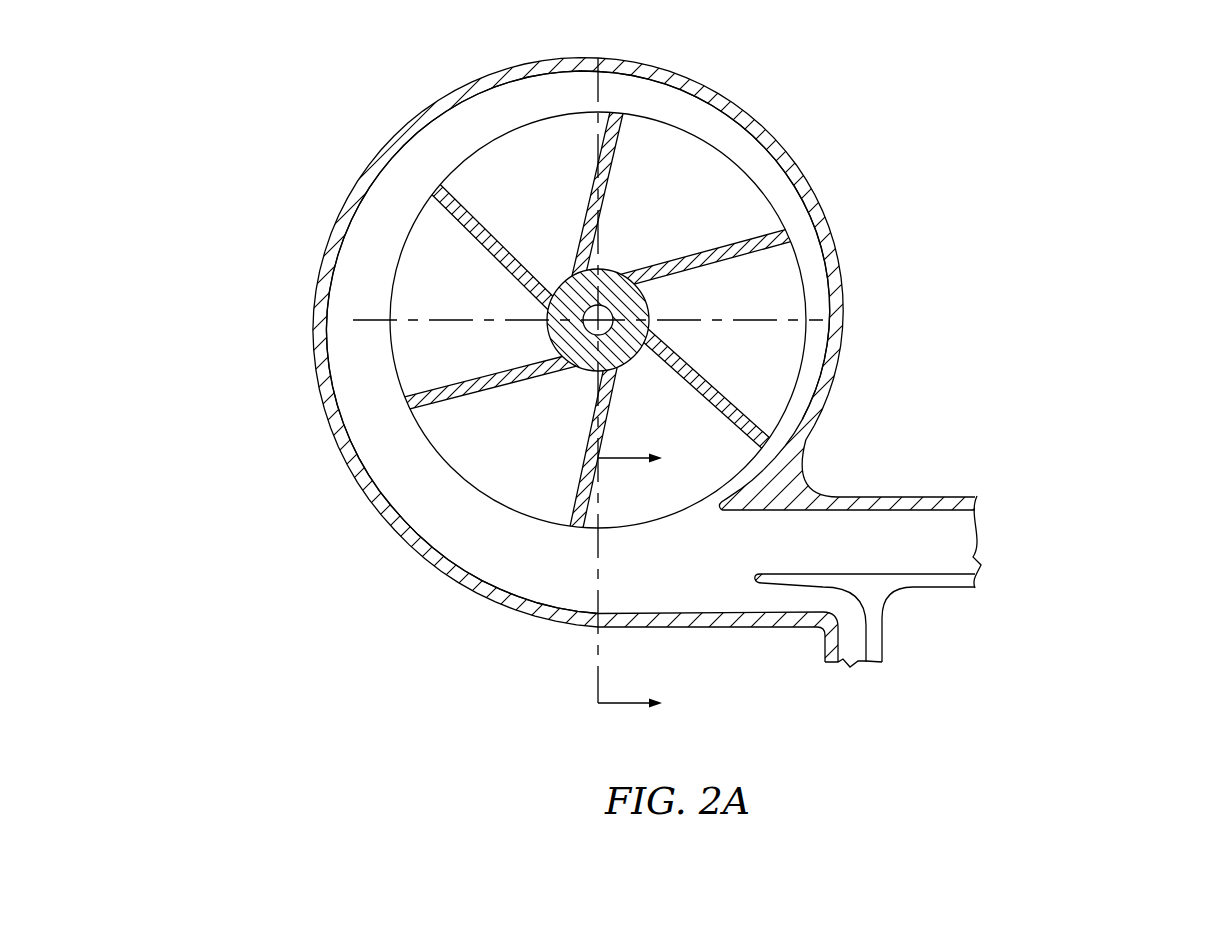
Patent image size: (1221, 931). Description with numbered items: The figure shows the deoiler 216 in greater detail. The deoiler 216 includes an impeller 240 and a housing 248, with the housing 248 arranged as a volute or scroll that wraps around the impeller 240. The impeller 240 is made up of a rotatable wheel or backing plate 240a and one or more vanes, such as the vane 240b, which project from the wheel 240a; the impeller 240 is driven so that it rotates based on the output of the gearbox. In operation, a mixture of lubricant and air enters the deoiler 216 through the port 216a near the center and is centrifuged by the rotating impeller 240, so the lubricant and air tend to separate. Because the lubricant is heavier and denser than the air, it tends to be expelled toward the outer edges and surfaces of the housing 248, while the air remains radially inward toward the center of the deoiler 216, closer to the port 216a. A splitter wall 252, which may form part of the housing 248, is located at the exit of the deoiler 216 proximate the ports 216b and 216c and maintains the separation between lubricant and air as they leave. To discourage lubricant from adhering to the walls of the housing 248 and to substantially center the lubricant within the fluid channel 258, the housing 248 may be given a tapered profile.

The deoiler 216 is at (935, 160).
The housing 248 is at (400, 122).
The impeller 240 is at (803, 276).
The wheel/backing plate 240a is at (427, 357).
The vane 240b is at (438, 227).
The port 216a is at (613, 322).
The port 216b is at (853, 642).
The port 216c is at (955, 543).
The splitter wall 252 is at (763, 583).
The fluid channel 258 is at (457, 523).